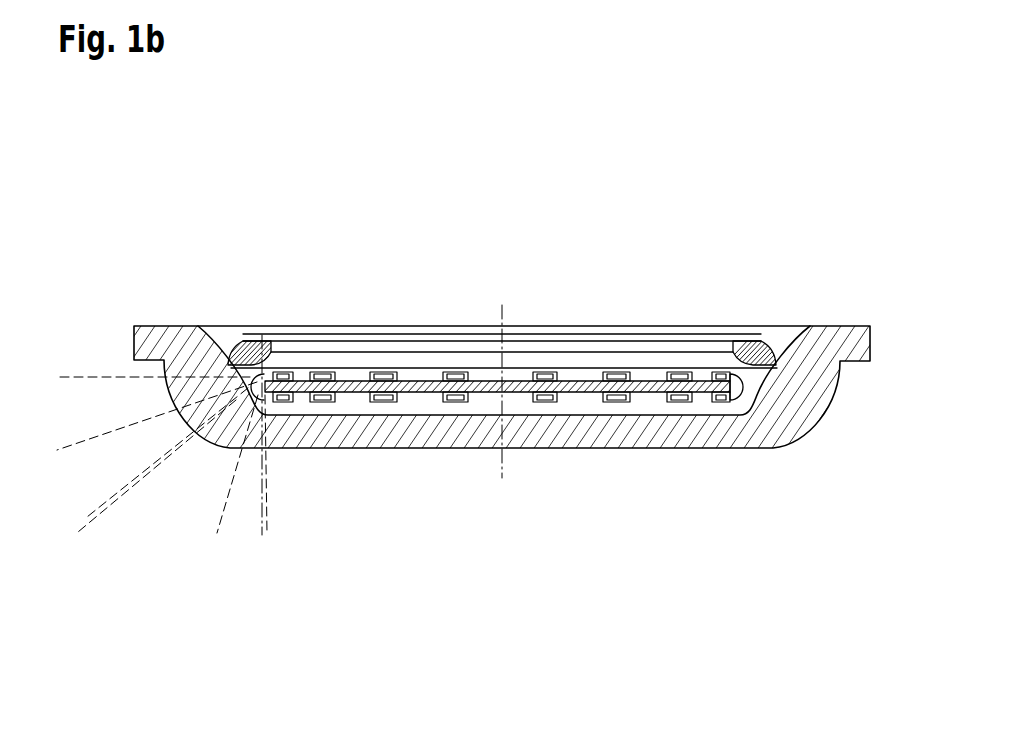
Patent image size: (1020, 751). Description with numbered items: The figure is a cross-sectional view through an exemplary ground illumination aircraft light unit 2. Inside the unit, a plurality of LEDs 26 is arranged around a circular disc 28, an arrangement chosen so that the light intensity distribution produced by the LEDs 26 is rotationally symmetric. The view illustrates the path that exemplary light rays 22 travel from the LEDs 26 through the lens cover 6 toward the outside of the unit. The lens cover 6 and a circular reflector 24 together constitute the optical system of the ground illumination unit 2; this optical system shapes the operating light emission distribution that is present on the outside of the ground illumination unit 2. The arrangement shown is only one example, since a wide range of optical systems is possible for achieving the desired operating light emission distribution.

The ground illumination aircraft light unit 2 is at (694, 162).
The lens cover 6 is at (363, 440).
The light rays 22 is at (118, 507).
The circular reflector 24 is at (245, 340).
The LEDs 26 is at (448, 403).
The circular disc 28 is at (570, 387).